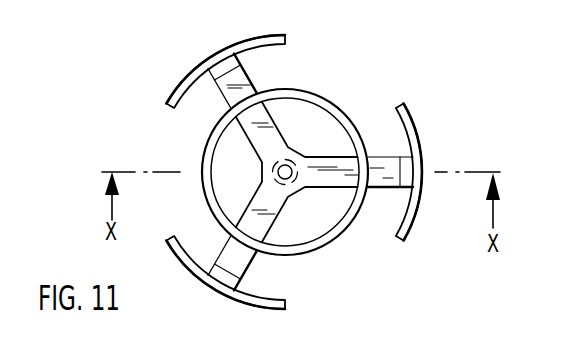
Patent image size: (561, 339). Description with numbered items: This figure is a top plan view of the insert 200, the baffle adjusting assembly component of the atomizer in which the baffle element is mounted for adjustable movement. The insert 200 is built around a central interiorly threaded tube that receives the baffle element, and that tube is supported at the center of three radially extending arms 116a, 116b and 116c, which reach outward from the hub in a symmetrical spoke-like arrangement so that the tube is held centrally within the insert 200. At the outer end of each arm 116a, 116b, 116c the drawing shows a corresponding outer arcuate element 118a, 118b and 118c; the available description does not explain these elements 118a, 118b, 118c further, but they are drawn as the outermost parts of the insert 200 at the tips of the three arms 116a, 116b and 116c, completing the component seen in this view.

The insert 200 is at (352, 92).
The radially extending arm 116a is at (240, 77).
The radially extending arm 116b is at (243, 263).
The radially extending arm 116c is at (390, 185).
The arcuate cutter segment 118a is at (238, 43).
The arcuate cutter segment 118b is at (212, 283).
The arcuate cutter segment 118c is at (414, 125).